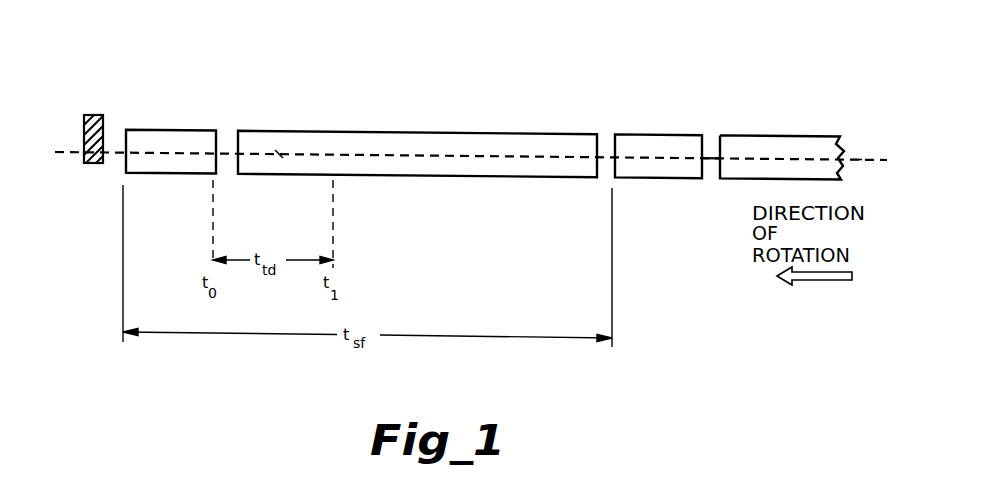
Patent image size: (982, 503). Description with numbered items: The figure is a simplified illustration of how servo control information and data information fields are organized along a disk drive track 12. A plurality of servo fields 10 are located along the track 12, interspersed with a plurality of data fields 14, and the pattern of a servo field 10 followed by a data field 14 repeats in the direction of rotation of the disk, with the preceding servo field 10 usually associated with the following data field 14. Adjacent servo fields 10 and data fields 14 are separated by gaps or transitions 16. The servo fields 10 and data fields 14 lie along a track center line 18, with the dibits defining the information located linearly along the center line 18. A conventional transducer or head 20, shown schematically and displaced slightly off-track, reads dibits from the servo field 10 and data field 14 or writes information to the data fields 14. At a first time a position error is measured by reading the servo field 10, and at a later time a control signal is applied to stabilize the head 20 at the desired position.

The servo field 10 is at (177, 129).
The track 12 is at (492, 72).
The data field 14 is at (350, 131).
The gap or transition 16 is at (228, 130).
The track center line 18 is at (857, 158).
The transducer or head 20 is at (100, 113).